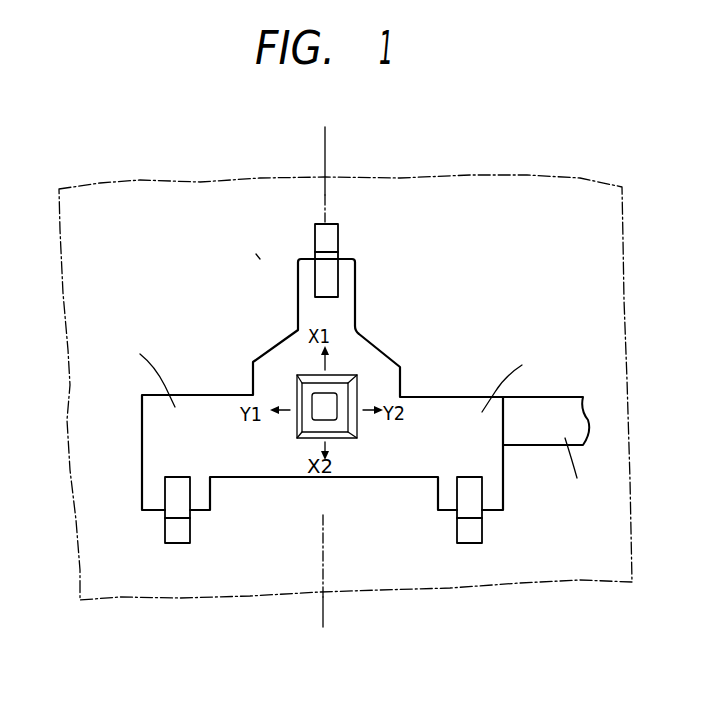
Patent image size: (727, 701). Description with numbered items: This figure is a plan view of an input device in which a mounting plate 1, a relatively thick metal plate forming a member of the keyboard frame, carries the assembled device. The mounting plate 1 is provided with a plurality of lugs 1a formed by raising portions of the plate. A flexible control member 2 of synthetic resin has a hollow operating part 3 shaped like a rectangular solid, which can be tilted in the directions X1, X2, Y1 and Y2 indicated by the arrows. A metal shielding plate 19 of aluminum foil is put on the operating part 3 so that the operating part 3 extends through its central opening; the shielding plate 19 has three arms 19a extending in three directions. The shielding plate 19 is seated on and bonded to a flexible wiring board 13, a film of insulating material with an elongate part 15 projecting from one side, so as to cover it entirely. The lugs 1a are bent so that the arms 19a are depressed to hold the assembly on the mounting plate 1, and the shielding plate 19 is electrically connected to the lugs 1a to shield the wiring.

The mounting plate 1 is at (616, 290).
The lugs 1a is at (345, 281).
The control member 2 is at (355, 378).
The operating part 3 is at (283, 362).
The flexible wiring board 13 is at (565, 397).
The elongate part 15 is at (578, 470).
The shielding plate 19 is at (455, 395).
The arms 19a is at (336, 315).